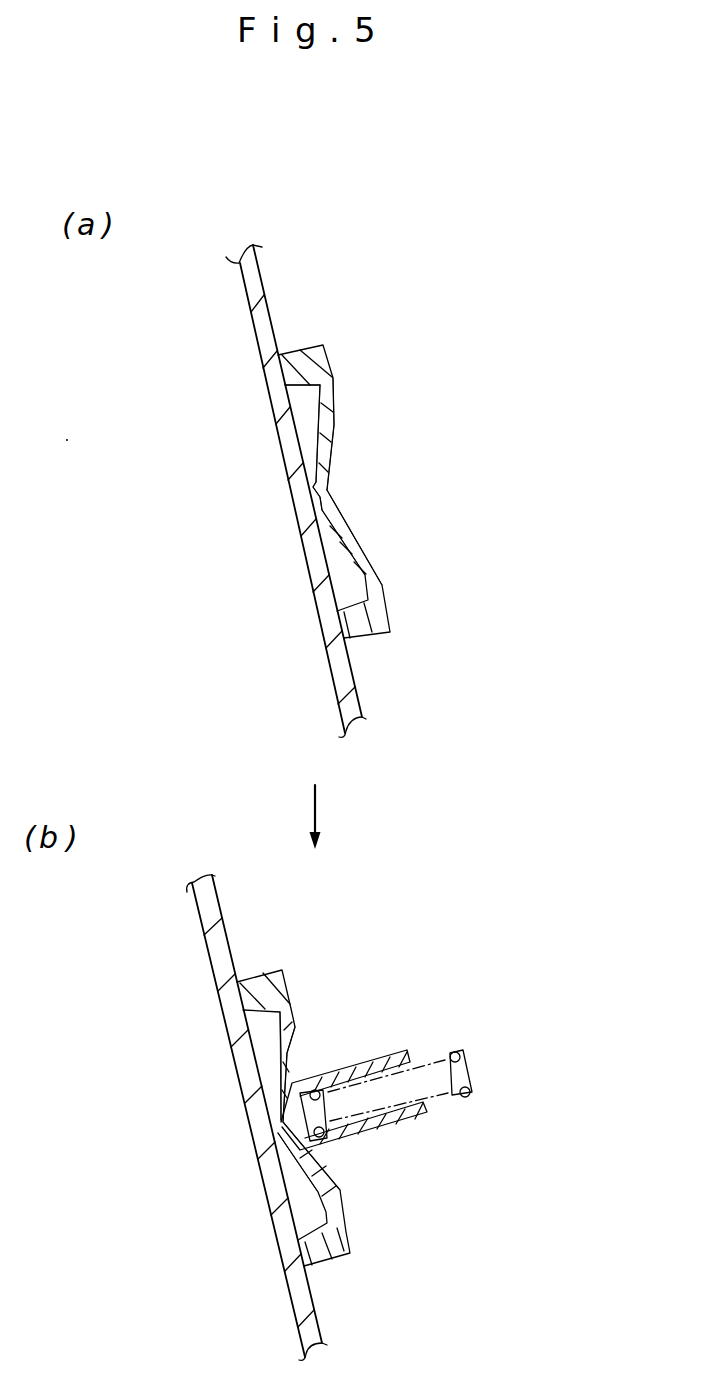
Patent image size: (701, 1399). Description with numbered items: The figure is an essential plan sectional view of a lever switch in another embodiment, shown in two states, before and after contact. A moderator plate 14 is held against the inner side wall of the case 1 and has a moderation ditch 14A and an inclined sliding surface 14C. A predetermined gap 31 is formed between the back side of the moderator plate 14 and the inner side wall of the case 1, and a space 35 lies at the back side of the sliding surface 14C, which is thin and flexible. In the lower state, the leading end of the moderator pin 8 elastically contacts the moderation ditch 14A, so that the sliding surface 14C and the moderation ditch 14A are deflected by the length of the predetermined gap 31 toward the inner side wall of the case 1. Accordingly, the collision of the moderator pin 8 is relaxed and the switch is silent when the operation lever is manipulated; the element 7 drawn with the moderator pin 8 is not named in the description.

The case 1 is at (345, 678).
The moderator plate 14 is at (390, 622).
The moderation ditch 14A is at (325, 497).
The sliding surface 14C is at (330, 440).
The space 35 is at (305, 427).
The predetermined gap 31 is at (319, 496).
The bolt 7 is at (470, 1095).
The moderator pin 8 is at (408, 1127).